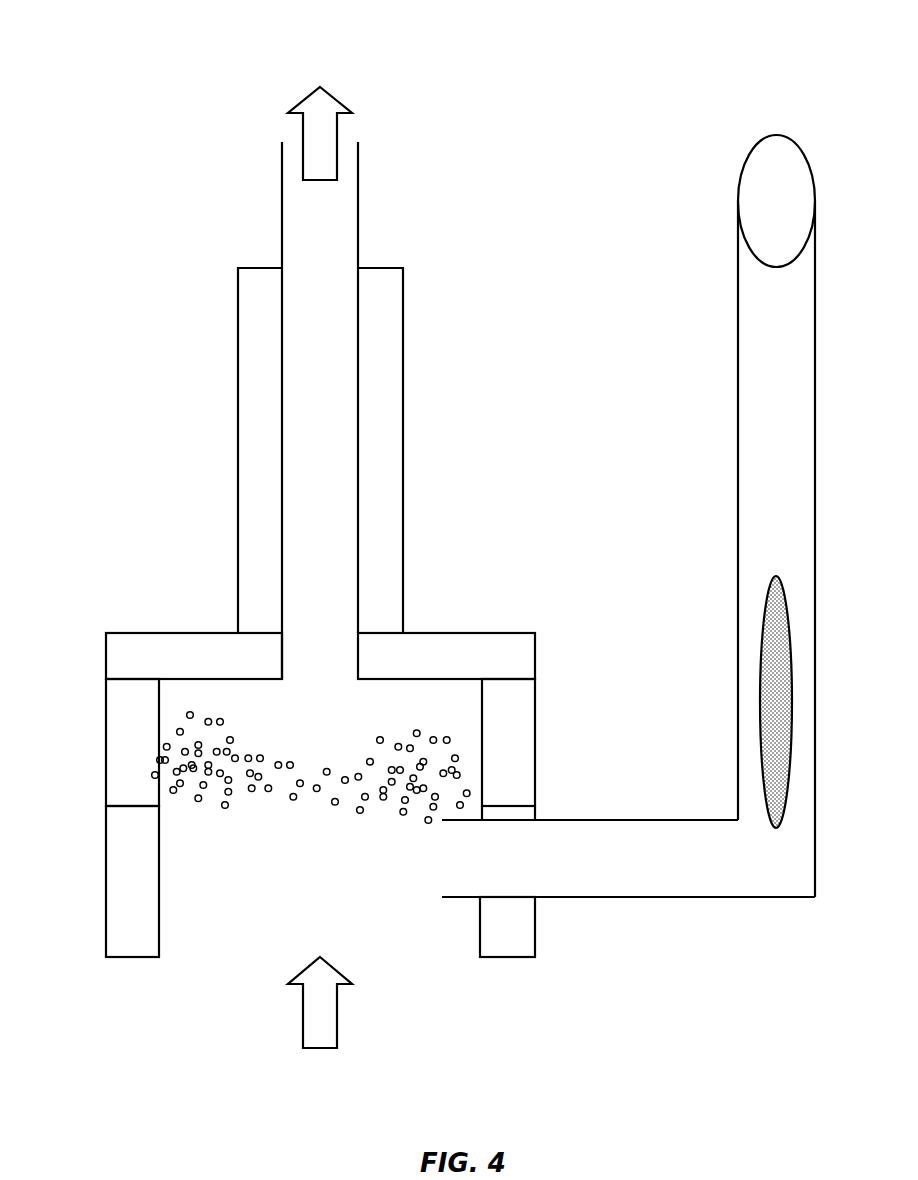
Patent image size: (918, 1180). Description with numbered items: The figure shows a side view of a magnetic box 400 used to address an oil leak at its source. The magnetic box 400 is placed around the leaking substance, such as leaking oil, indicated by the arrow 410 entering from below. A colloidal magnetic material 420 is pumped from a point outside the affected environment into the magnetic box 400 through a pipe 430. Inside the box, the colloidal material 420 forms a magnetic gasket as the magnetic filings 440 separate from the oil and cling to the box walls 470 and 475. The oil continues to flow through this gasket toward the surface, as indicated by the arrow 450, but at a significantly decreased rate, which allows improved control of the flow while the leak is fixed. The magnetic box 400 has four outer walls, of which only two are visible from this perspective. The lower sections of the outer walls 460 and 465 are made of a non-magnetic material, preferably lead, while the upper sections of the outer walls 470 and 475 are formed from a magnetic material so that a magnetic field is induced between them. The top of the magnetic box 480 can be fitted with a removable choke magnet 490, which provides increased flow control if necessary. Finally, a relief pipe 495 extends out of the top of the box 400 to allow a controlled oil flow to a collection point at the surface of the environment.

The magnetic box 400 is at (152, 36).
The arrow indicating leaking oil 410 is at (302, 1015).
The colloidal magnetic material 420 is at (757, 703).
The pipe 430 is at (753, 343).
The magnetic filings 440 is at (288, 762).
The arrow indicating oil flow 450 is at (328, 135).
The lower section of outer wall 460 is at (105, 920).
The lower section of outer wall 465 is at (537, 920).
The upper section of outer wall 470 is at (105, 733).
The upper section of outer wall 475 is at (537, 733).
The top of magnetic box 480 is at (133, 633).
The choke magnet 490 is at (237, 330).
The relief pipe 495 is at (300, 440).